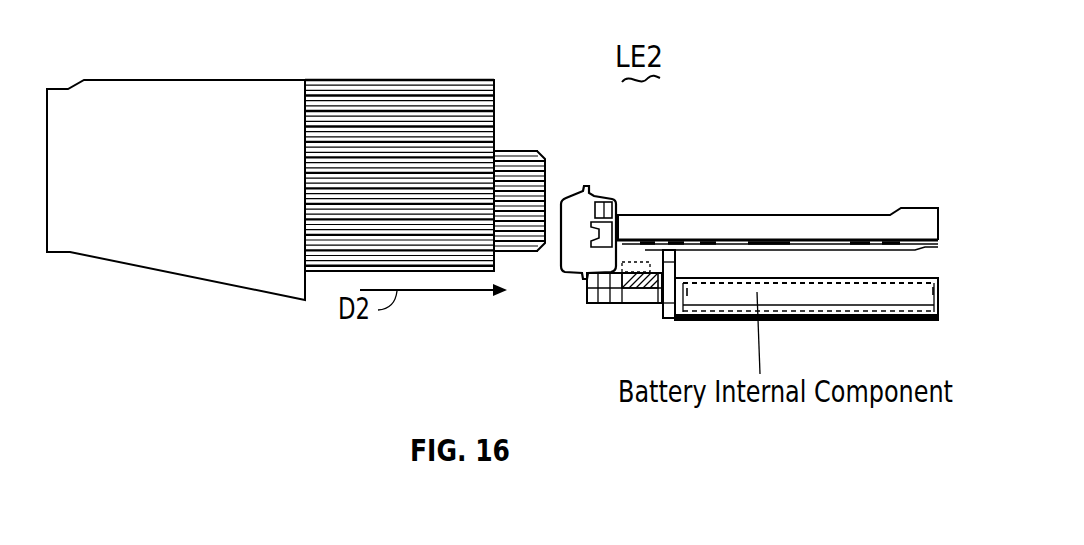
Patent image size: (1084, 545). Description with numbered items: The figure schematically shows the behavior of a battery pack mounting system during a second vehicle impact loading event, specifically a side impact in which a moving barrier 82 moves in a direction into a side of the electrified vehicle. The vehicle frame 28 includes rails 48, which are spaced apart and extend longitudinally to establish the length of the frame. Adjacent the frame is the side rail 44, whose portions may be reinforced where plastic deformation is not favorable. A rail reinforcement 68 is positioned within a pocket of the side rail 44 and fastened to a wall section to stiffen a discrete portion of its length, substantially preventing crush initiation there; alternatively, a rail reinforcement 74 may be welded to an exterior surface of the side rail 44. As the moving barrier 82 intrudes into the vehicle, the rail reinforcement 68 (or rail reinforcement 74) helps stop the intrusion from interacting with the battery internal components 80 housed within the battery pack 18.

The moving barrier 82 is at (277, 90).
The vehicle frame 28 is at (605, 186).
The rails 48 is at (629, 208).
The rail reinforcement 74 is at (635, 274).
The side rail 44 is at (586, 324).
The rail reinforcement 68 is at (637, 298).
The battery housing 18 is at (802, 268).
The battery internal components 80 is at (850, 313).